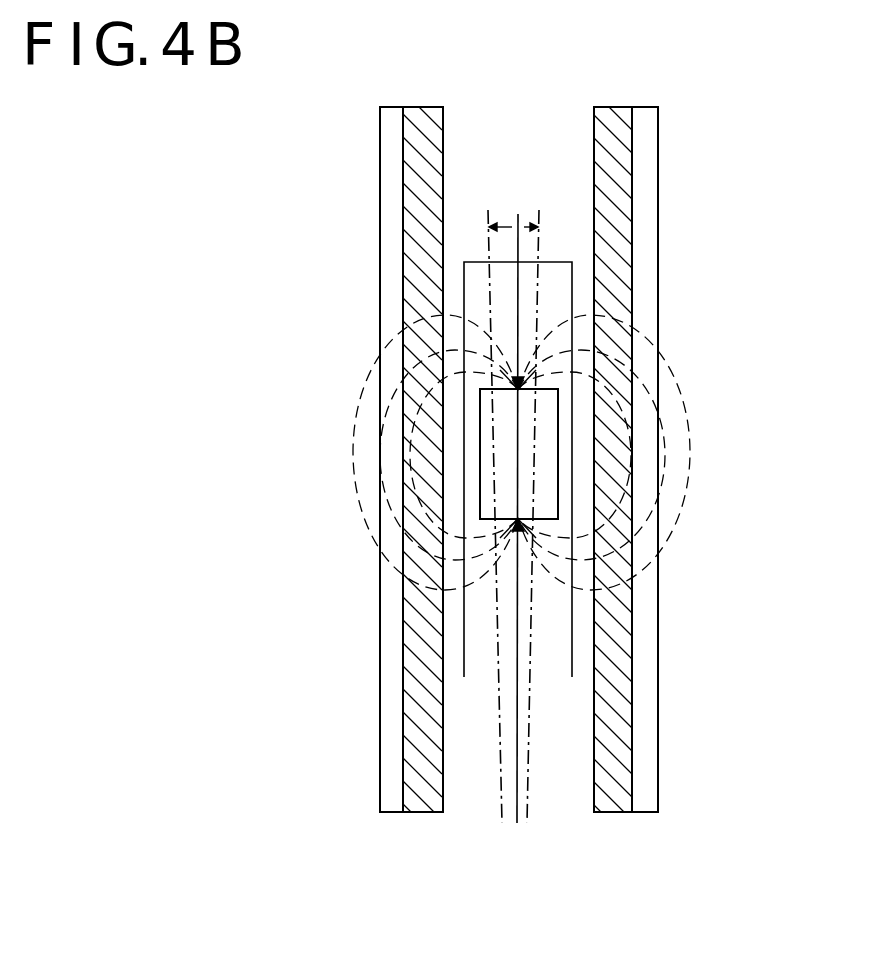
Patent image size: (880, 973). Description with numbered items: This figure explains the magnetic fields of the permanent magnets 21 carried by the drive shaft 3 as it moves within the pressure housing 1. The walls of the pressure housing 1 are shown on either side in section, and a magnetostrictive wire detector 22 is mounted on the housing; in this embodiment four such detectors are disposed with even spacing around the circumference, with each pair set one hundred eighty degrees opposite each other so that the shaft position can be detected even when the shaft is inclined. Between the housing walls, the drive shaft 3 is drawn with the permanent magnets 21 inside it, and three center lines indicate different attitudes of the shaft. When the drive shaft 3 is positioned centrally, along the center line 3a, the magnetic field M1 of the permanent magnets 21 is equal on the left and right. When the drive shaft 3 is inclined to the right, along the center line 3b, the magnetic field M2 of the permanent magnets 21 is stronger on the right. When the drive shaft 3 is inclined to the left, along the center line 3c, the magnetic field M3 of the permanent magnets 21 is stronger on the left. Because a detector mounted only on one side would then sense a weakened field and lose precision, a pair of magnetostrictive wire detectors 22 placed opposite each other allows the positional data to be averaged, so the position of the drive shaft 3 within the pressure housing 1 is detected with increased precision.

The pressure housing 1 is at (632, 660).
The magnetostrictive wire detector 22 is at (657, 730).
The drive shaft 3 is at (573, 262).
The center line 3a is at (518, 216).
The center line 3b is at (539, 215).
The center line 3c is at (488, 215).
The permanent magnet 21 is at (558, 428).
The magnetic field M1 is at (385, 398).
The magnetic field M2 is at (398, 492).
The magnetic field M3 is at (370, 372).